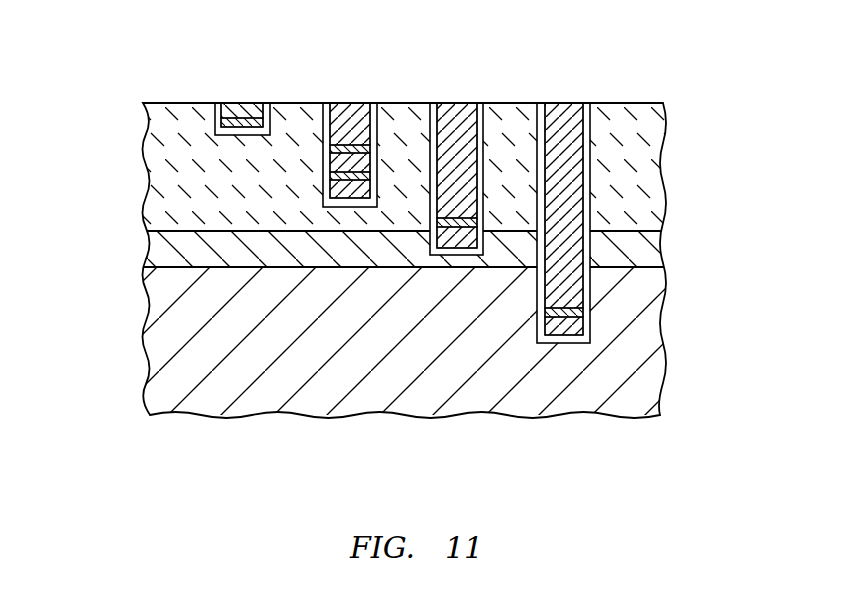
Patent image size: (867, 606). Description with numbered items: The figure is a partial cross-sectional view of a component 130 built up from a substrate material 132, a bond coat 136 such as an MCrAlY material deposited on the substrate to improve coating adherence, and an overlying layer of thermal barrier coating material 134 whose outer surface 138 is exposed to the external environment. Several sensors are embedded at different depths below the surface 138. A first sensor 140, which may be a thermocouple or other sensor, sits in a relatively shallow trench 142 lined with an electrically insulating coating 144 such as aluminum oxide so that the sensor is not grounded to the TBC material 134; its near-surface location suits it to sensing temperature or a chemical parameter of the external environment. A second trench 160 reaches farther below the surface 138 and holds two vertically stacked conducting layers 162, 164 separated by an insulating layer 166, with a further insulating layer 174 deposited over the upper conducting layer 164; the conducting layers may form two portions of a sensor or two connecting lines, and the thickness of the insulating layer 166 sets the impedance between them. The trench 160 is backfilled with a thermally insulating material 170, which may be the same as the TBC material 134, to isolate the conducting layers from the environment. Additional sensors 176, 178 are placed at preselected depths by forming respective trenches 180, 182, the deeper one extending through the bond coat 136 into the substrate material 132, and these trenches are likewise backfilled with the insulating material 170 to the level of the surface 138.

The component 130 is at (670, 48).
The substrate material 132 is at (148, 346).
The thermal barrier coating material 134 is at (142, 118).
The bond coat 136 is at (142, 249).
The surface 138 is at (170, 103).
The first sensor 140 is at (192, 127).
The trench 142 is at (252, 135).
The electrically insulating coating 144 is at (220, 128).
The second trench 160 is at (340, 207).
The conducting layer 162 is at (356, 207).
The conducting layer 164 is at (377, 160).
The insulating layer 166 is at (377, 177).
The thermally insulating material 170 is at (334, 116).
The insulating layer 174 is at (323, 148).
The additional sensor 176 is at (443, 255).
The additional sensor 178 is at (573, 328).
The trench 180 is at (480, 255).
The trench 182 is at (568, 343).